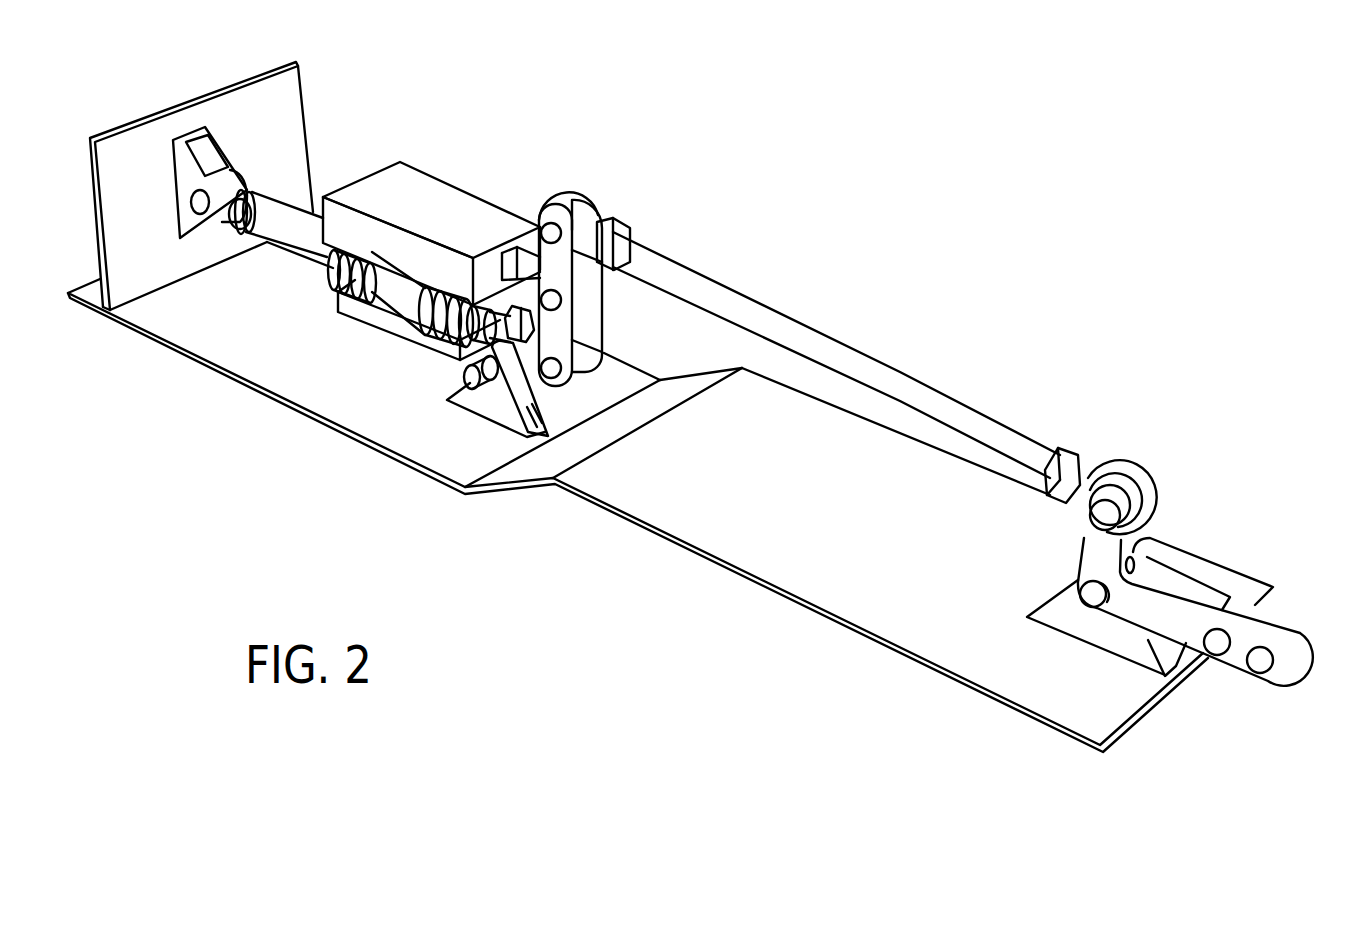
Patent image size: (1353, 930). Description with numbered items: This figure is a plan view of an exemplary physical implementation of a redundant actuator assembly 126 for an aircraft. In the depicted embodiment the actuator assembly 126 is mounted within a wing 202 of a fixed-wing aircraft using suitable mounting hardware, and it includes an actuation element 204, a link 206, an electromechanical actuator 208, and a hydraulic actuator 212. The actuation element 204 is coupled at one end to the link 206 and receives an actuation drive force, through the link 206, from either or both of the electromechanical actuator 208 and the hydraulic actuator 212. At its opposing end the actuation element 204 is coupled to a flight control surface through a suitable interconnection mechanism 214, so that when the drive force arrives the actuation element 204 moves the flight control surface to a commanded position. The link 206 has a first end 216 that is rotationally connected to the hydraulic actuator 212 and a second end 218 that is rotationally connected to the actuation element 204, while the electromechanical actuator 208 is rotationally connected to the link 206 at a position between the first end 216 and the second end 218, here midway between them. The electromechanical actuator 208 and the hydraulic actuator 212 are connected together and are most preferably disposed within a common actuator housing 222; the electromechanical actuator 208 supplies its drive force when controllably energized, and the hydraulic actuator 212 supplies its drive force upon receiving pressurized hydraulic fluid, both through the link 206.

The redundant actuator assembly 126 is at (893, 132).
The wing 202 is at (788, 600).
The actuation element 204 is at (923, 391).
The link 206 is at (558, 272).
The electromechanical actuator 208 is at (443, 187).
The hydraulic actuator 212 is at (400, 323).
The interconnection mechanism 214 is at (1278, 627).
The link first end 216 is at (543, 372).
The link second end 218 is at (561, 222).
The common actuator housing 222 is at (242, 167).